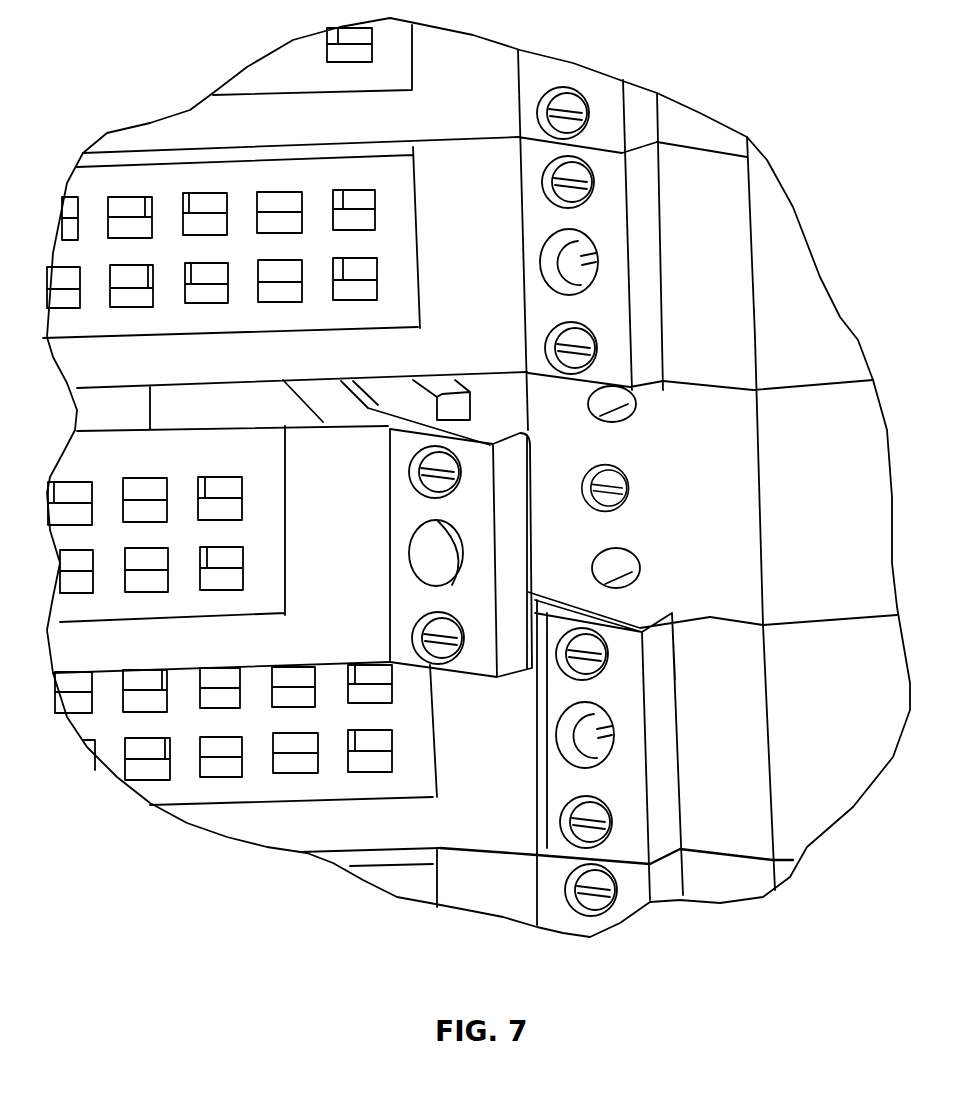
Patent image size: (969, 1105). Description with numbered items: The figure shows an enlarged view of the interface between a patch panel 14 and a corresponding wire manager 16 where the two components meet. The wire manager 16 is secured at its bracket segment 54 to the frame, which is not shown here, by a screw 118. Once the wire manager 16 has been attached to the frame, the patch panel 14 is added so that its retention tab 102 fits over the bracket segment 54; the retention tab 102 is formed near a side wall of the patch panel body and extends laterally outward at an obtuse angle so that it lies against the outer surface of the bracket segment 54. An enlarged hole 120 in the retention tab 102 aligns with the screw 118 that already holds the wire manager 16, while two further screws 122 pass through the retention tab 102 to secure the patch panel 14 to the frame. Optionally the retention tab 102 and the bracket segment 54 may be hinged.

The patch panel 14 is at (331, 532).
The wire manager 16 is at (836, 491).
The bracket segment 54 is at (616, 487).
The retention tab 102 is at (424, 553).
The screw 118 is at (617, 505).
The enlarged hole 120 is at (389, 553).
The screws 122 is at (415, 456).